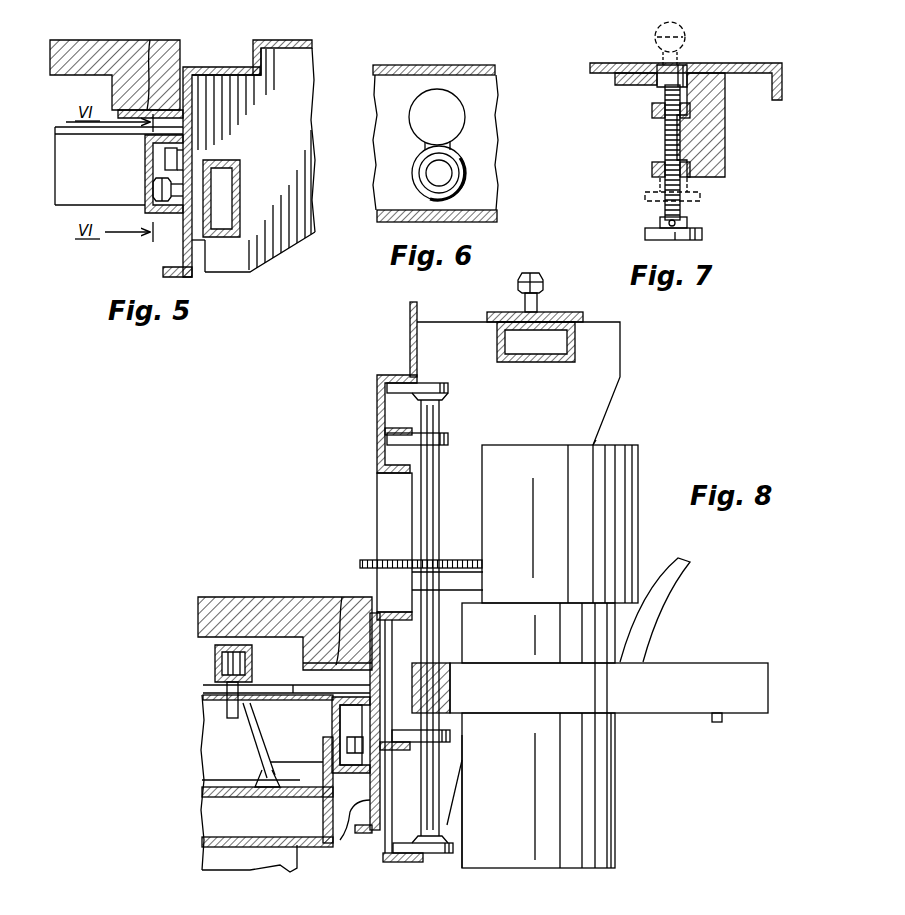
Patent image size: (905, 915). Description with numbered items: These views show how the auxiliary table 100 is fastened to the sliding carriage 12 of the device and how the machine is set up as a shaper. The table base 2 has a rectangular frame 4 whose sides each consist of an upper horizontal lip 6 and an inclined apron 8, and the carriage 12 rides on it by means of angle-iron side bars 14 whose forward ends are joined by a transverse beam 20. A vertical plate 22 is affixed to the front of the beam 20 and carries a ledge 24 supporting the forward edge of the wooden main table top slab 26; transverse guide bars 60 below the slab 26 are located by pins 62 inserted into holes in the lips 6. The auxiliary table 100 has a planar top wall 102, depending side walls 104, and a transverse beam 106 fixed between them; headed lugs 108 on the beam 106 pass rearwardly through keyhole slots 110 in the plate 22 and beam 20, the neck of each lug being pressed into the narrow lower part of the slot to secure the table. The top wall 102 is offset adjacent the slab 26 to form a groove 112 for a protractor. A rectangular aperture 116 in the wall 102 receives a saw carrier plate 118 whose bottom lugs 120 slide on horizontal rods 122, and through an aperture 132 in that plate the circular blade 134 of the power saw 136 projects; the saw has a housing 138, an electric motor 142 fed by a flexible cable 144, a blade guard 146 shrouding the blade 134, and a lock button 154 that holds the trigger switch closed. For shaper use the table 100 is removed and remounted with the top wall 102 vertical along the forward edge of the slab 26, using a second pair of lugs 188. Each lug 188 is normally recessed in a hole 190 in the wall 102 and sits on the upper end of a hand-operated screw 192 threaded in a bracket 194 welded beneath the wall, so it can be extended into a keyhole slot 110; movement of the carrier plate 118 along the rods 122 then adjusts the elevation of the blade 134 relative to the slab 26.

In FIG. 8, the table base 2 is at (200, 747).
In FIG. 8, the frame 4 is at (200, 770).
In FIG. 8, the upper horizontal lip 6 is at (203, 704).
In FIG. 8, the apron 8 is at (258, 722).
In FIG. 8, the carriage 12 is at (293, 682).
In FIG. 5, the angle-iron side bar 14 is at (68, 205).
In FIG. 8, the angle-iron side bar 14 is at (268, 685).
In FIG. 5, the horizontal transverse beam 20 is at (150, 172).
In FIG. 6, the horizontal transverse beam 20 is at (443, 65).
In FIG. 8, the horizontal transverse beam 20 is at (332, 716).
In FIG. 5, the plate 22 is at (170, 262).
In FIG. 8, the plate 22 is at (356, 835).
In FIG. 5, the ledge 24 is at (150, 40).
In FIG. 8, the ledge 24 is at (340, 597).
In FIG. 5, the main table top slab 26 is at (72, 40).
In FIG. 8, the main table top slab 26 is at (226, 597).
In FIG. 8, the horizontal bar 60 is at (215, 666).
In FIG. 8, the pin 62 is at (227, 716).
In FIG. 5, the auxiliary table 100 is at (296, 40).
In FIG. 7, the auxiliary table 100 is at (762, 62).
In FIG. 8, the auxiliary table 100 is at (623, 352).
In FIG. 5, the top wall 102 is at (284, 40).
In FIG. 7, the top wall 102 is at (742, 63).
In FIG. 8, the top wall 102 is at (377, 412).
In FIG. 5, the side wall 104 is at (290, 263).
In FIG. 8, the side wall 104 is at (600, 408).
In FIG. 5, the horizontal transverse beam 106 is at (240, 183).
In FIG. 8, the horizontal transverse beam 106 is at (540, 362).
In FIG. 5, the headed lug 108 is at (153, 192).
In FIG. 6, the headed lug 108 is at (462, 166).
In FIG. 8, the headed lug 108 is at (541, 283).
In FIG. 5, the keyhole slot 110 is at (165, 158).
In FIG. 6, the keyhole slot 110 is at (414, 129).
In FIG. 5, the groove 112 is at (218, 67).
In FIG. 8, the groove 112 is at (410, 348).
In FIG. 8, the rectangular aperture 116 is at (431, 720).
In FIG. 8, the saw carrier plate 118 is at (380, 458).
In FIG. 8, the lug 120 is at (449, 438).
In FIG. 8, the horizontal rod 122 is at (432, 505).
In FIG. 8, the rectangular aperture 132 is at (377, 494).
In FIG. 8, the circular blade 134 is at (362, 560).
In FIG. 8, the power saw 136 is at (616, 808).
In FIG. 8, the housing 138 is at (510, 713).
In FIG. 8, the electric motor 142 is at (612, 765).
In FIG. 8, the flexible cable 144 is at (684, 582).
In FIG. 8, the blade guard 146 is at (633, 465).
In FIG. 8, the lock button 154 is at (716, 722).
In FIG. 7, the lug 188 is at (660, 66).
In FIG. 8, the lug 188 is at (347, 746).
In FIG. 7, the hole 190 is at (686, 68).
In FIG. 7, the hand-operated screw 192 is at (665, 145).
In FIG. 7, the bracket 194 is at (725, 147).